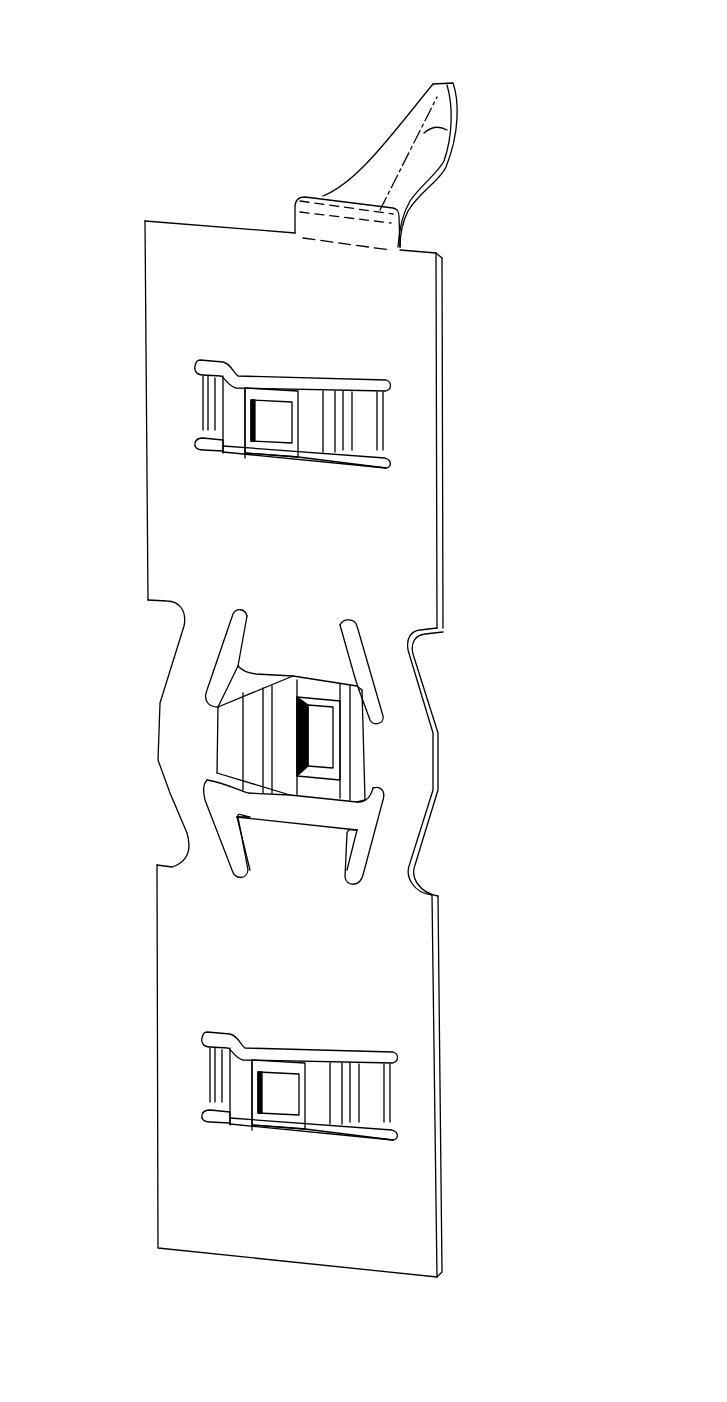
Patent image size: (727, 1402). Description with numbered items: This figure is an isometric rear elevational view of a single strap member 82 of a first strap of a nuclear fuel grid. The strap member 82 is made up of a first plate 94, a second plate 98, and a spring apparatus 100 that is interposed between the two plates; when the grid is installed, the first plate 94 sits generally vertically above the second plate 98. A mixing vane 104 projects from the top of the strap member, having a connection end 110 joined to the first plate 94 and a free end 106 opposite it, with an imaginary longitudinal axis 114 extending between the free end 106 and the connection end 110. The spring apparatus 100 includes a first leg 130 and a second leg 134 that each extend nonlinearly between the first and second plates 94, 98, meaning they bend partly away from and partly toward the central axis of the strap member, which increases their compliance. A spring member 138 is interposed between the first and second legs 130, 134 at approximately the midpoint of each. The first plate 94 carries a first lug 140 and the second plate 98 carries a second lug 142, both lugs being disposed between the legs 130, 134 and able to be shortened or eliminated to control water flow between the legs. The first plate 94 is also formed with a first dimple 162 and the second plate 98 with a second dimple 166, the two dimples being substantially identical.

The strap member 82 is at (189, 221).
The first plate 94 is at (446, 330).
The second plate 98 is at (440, 1033).
The spring apparatus 100 is at (441, 760).
The mixing vane 104 is at (446, 168).
The free end 106 is at (440, 78).
The connection end 110 is at (401, 243).
The longitudinal axis 114 is at (455, 129).
The first leg 130 is at (172, 798).
The second leg 134 is at (420, 687).
The spring member 138 is at (296, 792).
The first lug 140 is at (362, 660).
The second lug 142 is at (360, 857).
The first dimple 162 is at (239, 378).
The second dimple 166 is at (245, 1050).